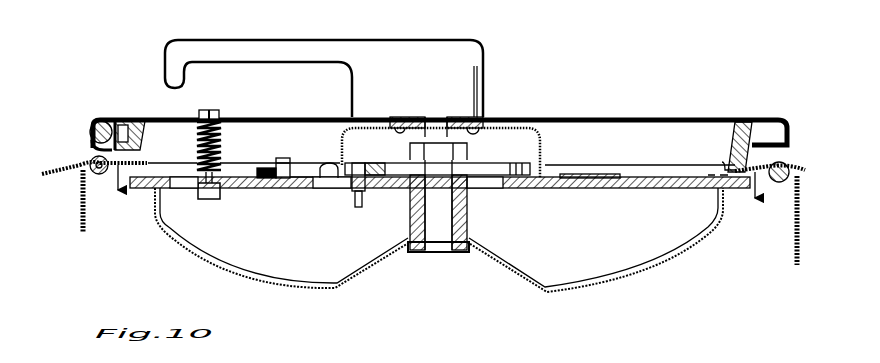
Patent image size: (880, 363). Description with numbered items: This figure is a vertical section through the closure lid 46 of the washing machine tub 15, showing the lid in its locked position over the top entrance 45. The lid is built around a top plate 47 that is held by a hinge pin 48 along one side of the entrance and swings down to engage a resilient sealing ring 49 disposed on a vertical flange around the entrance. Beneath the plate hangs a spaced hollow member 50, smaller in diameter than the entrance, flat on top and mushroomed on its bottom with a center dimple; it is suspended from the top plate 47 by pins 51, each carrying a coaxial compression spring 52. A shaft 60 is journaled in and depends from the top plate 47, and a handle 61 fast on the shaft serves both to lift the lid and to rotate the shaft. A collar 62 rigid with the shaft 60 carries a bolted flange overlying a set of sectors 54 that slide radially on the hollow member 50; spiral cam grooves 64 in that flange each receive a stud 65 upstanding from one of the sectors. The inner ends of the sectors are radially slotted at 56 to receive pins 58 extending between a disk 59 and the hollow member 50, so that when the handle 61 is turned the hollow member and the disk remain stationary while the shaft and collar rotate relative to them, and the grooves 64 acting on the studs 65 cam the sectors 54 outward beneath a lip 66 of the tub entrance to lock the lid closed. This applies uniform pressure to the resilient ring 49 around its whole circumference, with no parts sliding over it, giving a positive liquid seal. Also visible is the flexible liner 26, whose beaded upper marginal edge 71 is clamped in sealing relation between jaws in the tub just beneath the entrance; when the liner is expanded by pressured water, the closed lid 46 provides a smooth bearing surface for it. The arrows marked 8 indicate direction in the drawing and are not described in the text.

The direction arrow 8 is at (437, 191).
The tub 15 is at (52, 172).
The flexible liner 26 is at (80, 222).
The top entrance 45 is at (724, 130).
The closure lid 46 is at (664, 118).
The top plate 47 is at (618, 118).
The hinge pin 48 is at (93, 122).
The resilient sealing ring 49 is at (147, 124).
The hollow member 50 is at (277, 281).
The pins 51 is at (222, 147).
The compression spring 52 is at (222, 133).
The sectors 54 is at (147, 190).
The radial slots 56 is at (323, 188).
The pins 58 is at (357, 207).
The disk 59 is at (393, 165).
The shaft 60 is at (465, 218).
The handle 61 is at (357, 43).
The collar 62 is at (545, 143).
The spiral cam grooves 64 is at (333, 165).
The stud 65 is at (290, 164).
The lip 66 is at (722, 160).
The upper marginal edge 71 is at (101, 170).